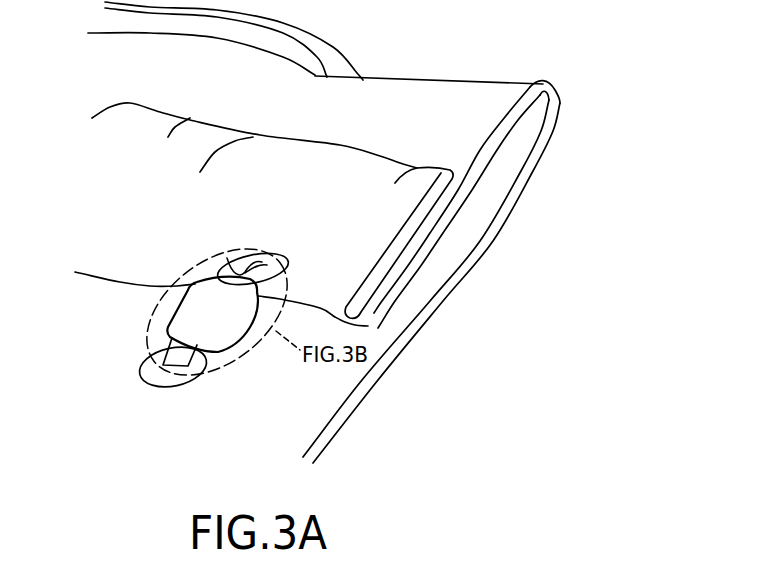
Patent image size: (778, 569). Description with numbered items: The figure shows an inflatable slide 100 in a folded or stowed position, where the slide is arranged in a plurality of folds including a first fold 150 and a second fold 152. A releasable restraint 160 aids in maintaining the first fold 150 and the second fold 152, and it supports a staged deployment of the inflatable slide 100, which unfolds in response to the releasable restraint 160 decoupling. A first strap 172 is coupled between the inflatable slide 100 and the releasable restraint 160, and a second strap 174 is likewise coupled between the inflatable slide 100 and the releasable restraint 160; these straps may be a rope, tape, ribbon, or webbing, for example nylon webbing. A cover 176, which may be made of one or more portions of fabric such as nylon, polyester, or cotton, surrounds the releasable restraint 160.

The inflatable slide 100 is at (463, 110).
The first fold 150 is at (560, 103).
The second fold 152 is at (368, 326).
The releasable restraint 160 is at (258, 373).
The first strap 172 is at (183, 350).
The second strap 174 is at (226, 264).
The cover 176 is at (212, 313).